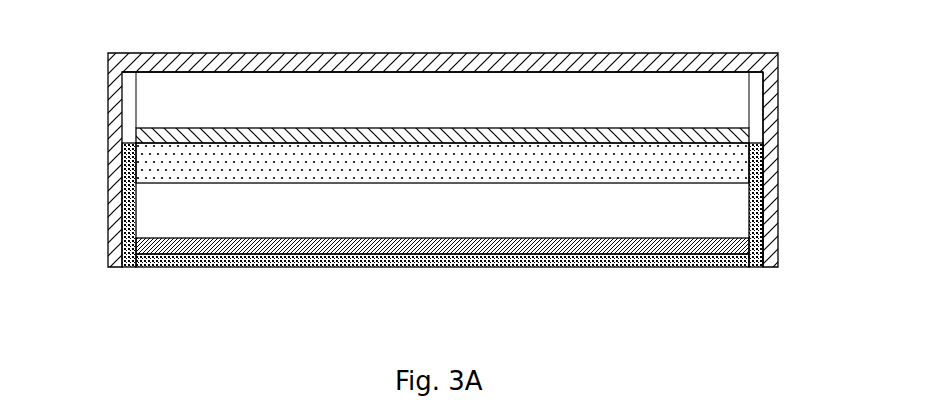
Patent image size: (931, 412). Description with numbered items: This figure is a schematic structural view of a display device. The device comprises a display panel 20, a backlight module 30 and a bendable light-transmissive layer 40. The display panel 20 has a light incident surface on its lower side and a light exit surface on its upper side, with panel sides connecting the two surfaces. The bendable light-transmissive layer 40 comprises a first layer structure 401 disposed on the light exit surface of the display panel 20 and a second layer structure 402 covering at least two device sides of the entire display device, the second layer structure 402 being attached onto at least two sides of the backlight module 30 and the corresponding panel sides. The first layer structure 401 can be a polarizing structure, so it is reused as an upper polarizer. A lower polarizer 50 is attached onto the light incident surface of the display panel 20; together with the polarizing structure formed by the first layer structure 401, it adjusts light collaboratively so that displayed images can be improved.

The bendable light-transmissive layer 40 is at (465, 133).
The first layer structure 401 is at (443, 42).
The second layer structure 402 is at (771, 166).
The display panel 20 is at (684, 101).
The lower polarizer 50 is at (137, 135).
The backlight module 30 is at (442, 231).